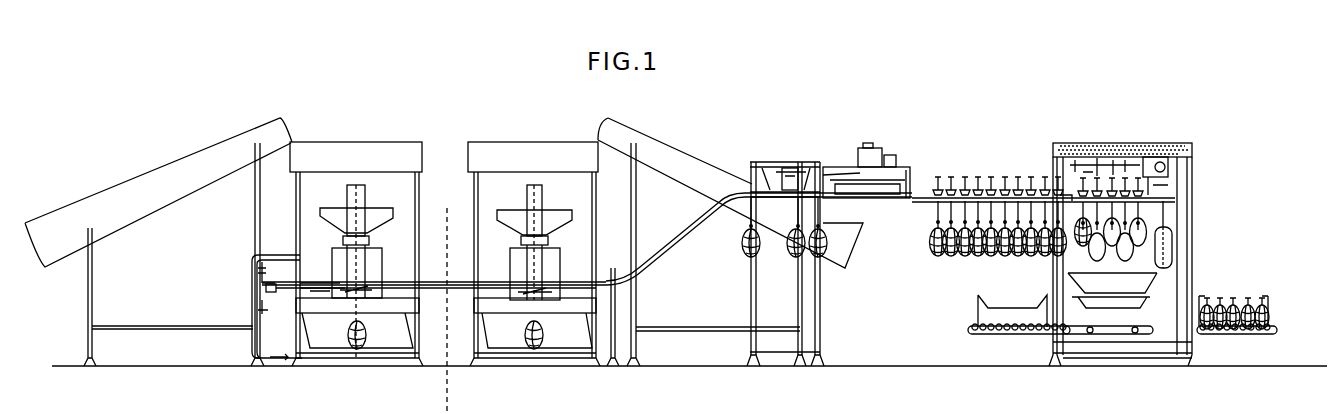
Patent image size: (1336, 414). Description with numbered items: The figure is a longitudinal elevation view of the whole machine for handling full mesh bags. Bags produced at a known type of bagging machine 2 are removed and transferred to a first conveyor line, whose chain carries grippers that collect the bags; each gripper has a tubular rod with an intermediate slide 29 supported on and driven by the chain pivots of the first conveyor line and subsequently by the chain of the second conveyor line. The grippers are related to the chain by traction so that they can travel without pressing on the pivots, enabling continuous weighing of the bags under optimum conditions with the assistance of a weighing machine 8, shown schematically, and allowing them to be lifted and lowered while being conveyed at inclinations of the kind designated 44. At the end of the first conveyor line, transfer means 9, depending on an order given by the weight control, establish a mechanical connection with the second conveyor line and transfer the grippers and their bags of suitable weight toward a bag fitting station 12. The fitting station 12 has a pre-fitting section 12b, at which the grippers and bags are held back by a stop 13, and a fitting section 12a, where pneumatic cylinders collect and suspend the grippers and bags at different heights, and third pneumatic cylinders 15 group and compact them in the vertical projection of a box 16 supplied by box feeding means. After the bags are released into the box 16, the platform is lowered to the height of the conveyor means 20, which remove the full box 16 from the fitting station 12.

The bagging machine 2 is at (355, 185).
The weighing machine 8 is at (782, 164).
The transfer means 9 is at (908, 165).
The bag fitting station 12 is at (1127, 242).
The fitting section 12a is at (1124, 252).
The pre-fitting section 12b is at (972, 183).
The stop 13 is at (1063, 195).
The third pneumatic cylinders 15 is at (1065, 197).
The box 16 is at (995, 317).
The conveyor means 20 is at (1255, 333).
The intermediate slide 29 is at (1033, 240).
The inclination 44 is at (678, 227).